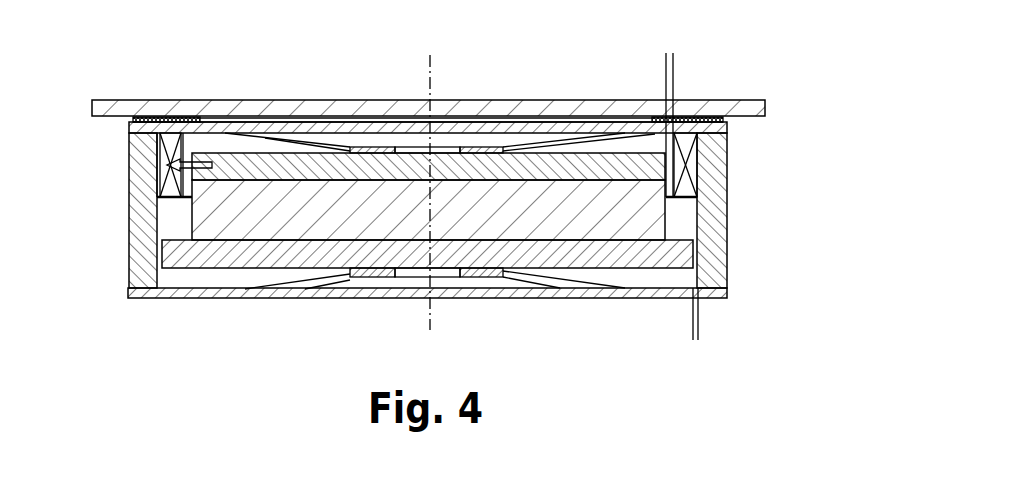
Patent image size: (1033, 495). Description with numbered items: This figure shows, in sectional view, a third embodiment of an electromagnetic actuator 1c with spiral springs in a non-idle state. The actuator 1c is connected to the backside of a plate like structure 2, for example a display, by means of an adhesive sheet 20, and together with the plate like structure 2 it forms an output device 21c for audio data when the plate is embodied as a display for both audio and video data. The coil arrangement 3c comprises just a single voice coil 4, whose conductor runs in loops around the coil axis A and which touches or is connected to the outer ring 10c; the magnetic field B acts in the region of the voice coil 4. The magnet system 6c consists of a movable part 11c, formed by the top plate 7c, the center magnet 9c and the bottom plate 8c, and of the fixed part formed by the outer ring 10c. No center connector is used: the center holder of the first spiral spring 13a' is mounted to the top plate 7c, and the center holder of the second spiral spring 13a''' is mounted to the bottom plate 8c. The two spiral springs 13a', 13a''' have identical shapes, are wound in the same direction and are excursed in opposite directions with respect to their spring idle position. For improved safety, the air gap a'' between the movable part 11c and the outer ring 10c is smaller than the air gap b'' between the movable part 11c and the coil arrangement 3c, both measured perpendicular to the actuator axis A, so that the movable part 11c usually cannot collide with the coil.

The electromagnetic actuator 1c is at (806, 322).
The plate like structure 2 is at (188, 106).
The adhesive sheet 20 is at (147, 118).
The output device 21c is at (735, 61).
The annular coil arrangement 3c is at (80, 160).
The voice coil 4 is at (162, 160).
The magnetic field B is at (193, 168).
The coil axis A is at (446, 190).
The magnet system 6c is at (862, 167).
The top plate 7c is at (653, 172).
The bottom plate 8c is at (683, 253).
The center magnet 9c is at (653, 210).
The outer ring 10c is at (717, 270).
The movable part of the magnet system 11c is at (797, 137).
The first spiral spring 13a' is at (440, 103).
The second spiral spring 13a''' is at (435, 307).
The air gap between the movable part of the magnet system and the outer ring a'' is at (702, 314).
The air gap between the movable part of the magnet system and the annular coil arran b'' is at (664, 114).